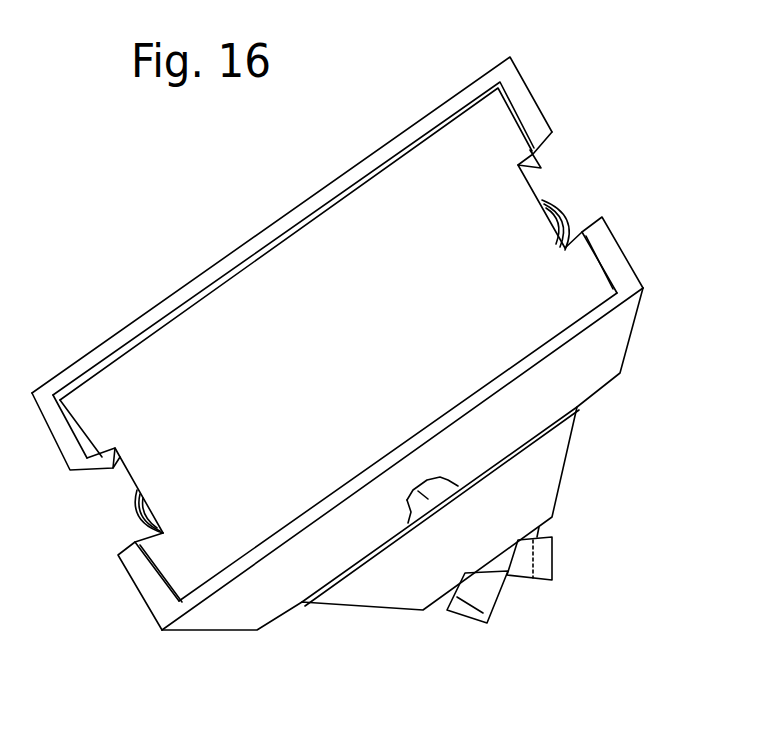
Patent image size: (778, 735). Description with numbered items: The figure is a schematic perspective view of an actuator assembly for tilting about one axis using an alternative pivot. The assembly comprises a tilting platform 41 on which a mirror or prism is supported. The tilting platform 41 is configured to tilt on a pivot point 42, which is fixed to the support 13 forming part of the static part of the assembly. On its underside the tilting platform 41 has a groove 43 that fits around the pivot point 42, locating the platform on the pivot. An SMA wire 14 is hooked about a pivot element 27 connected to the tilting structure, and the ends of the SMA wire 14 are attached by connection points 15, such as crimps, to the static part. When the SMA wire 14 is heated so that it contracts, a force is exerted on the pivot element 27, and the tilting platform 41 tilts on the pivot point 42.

The support 13 is at (537, 473).
The SMA wire 14 is at (572, 214).
The connection points 15 is at (547, 553).
The pivot element 27 is at (548, 198).
The tilting platform 41 is at (383, 150).
The pivot point 42 is at (417, 490).
The groove 43 is at (437, 473).